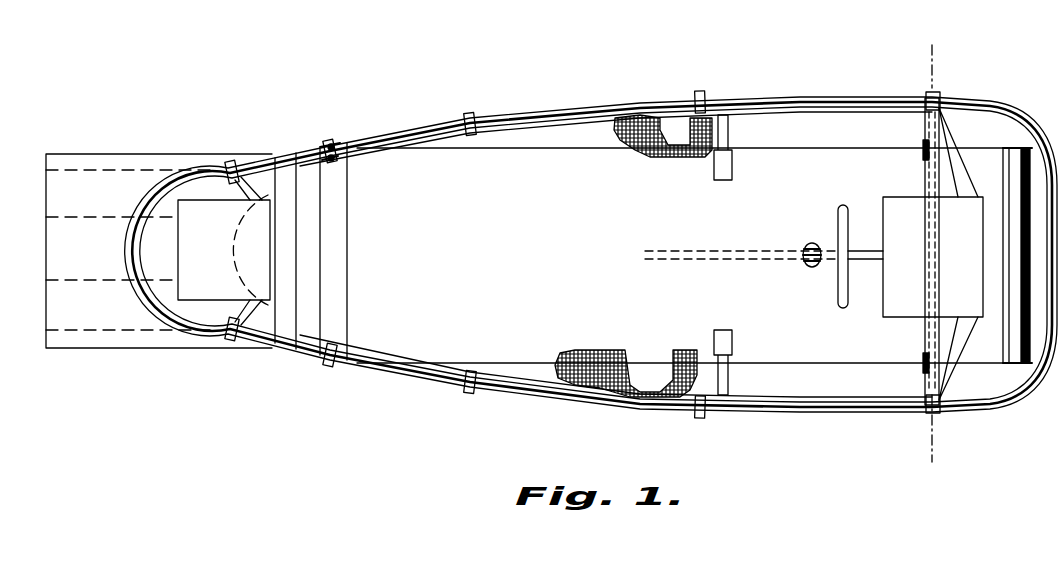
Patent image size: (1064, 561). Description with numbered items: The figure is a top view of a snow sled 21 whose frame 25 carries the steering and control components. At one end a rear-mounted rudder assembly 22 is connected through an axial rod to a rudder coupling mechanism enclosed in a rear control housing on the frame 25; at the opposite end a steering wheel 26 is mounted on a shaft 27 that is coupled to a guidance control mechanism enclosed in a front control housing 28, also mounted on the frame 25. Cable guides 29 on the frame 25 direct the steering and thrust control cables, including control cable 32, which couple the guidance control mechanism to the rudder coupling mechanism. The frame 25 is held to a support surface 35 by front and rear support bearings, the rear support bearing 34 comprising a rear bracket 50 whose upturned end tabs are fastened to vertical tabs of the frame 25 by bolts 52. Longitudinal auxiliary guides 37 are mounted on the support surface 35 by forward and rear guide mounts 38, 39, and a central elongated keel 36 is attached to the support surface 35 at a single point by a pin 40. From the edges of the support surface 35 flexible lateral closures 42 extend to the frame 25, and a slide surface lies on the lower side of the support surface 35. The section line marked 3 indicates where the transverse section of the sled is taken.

The snow sled 21 is at (243, 97).
The rudder assembly 22 is at (138, 132).
The frame 25 is at (385, 130).
The thrust control cable 32 is at (440, 125).
The rear support bearing 34 is at (323, 125).
The bolts 52 is at (328, 147).
The support surface 35 is at (556, 165).
The flexible lateral closures 42 is at (612, 130).
The cable guides 29 is at (703, 93).
The rear guide mount 39 is at (735, 392).
The central elongated keel 36 is at (682, 252).
The pin 40 is at (812, 267).
The steering wheel 26 is at (840, 205).
The shaft 27 is at (870, 235).
The front control housing 28 is at (968, 197).
The longitudinal auxiliary guides 37 is at (983, 372).
The forward guide mount 38 is at (915, 380).
The rear bracket 50 is at (348, 312).
The section line 3- 3 is at (938, 58).